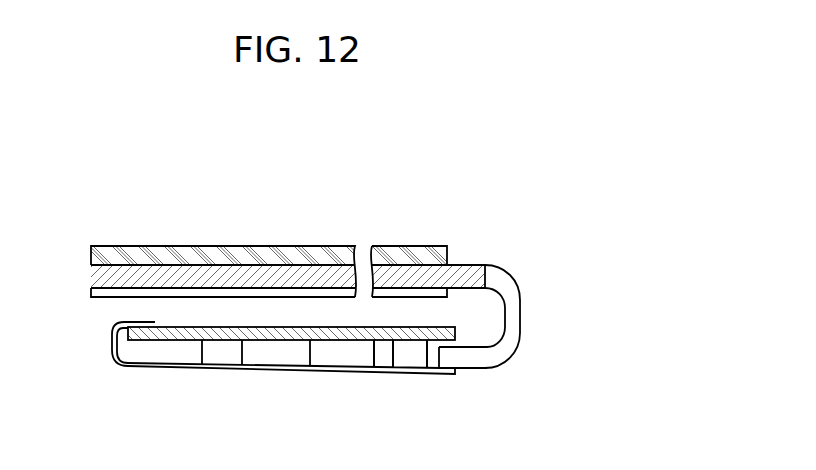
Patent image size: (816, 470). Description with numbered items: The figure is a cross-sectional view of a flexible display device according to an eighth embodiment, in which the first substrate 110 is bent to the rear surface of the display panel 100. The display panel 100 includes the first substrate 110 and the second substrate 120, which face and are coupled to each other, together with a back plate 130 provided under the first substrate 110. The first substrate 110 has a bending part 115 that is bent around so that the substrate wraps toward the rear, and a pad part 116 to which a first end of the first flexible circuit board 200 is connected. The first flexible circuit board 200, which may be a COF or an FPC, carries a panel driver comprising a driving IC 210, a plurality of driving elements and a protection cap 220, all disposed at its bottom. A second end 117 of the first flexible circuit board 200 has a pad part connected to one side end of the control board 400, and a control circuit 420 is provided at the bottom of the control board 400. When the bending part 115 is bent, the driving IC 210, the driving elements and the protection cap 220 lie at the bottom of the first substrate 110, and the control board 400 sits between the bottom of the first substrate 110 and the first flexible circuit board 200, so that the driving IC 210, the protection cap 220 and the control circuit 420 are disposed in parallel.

The display panel 100 is at (175, 186).
The first substrate 110 is at (177, 278).
The second substrate 120 is at (229, 258).
The back plate 130 is at (272, 290).
The bending part 115 is at (518, 303).
The pad part 116 is at (447, 378).
The second end 117 is at (112, 348).
The first flexible circuit board 200 is at (371, 372).
The driving IC 210 is at (420, 353).
The protection cap 220 is at (330, 354).
The control board 400 is at (458, 332).
The control circuit 420 is at (224, 353).